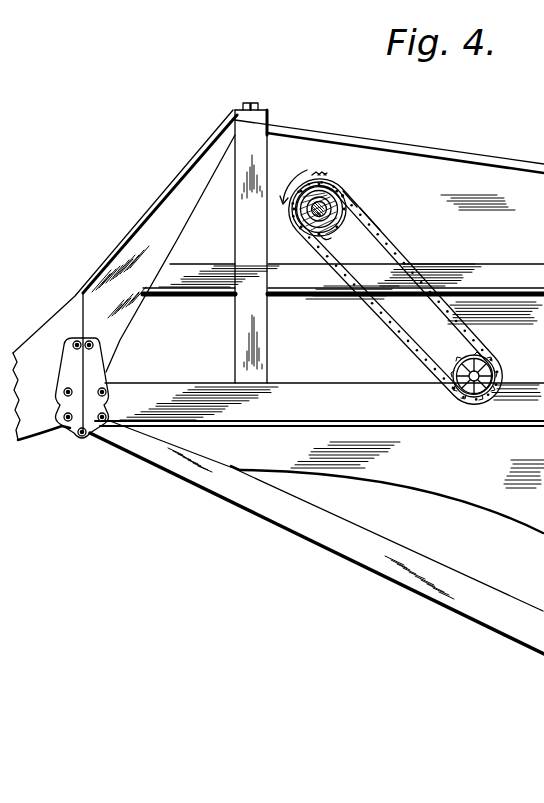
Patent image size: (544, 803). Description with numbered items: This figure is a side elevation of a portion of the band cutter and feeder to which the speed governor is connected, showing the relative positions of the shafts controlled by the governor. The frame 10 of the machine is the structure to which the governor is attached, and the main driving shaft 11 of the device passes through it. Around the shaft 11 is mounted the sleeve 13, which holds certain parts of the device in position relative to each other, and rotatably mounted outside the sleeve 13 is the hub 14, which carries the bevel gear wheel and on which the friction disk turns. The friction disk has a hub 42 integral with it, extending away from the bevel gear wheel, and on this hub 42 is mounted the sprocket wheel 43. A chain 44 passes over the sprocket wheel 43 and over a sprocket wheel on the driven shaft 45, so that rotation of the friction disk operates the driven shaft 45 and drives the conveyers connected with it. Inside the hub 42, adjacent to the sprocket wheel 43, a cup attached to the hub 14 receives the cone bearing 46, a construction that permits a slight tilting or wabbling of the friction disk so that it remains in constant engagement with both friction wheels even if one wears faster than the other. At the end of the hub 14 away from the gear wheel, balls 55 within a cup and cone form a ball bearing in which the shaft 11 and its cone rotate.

The frame 10 is at (331, 201).
The main driving shaft 11 is at (342, 197).
The sleeve 13 is at (340, 224).
The hub 14 is at (311, 238).
The hub 42 is at (357, 207).
The sprocket wheel 43 is at (329, 238).
The chain 44 is at (385, 233).
The driven shaft 45 is at (463, 358).
The cone bearing 46 is at (298, 223).
The balls 55 is at (314, 185).